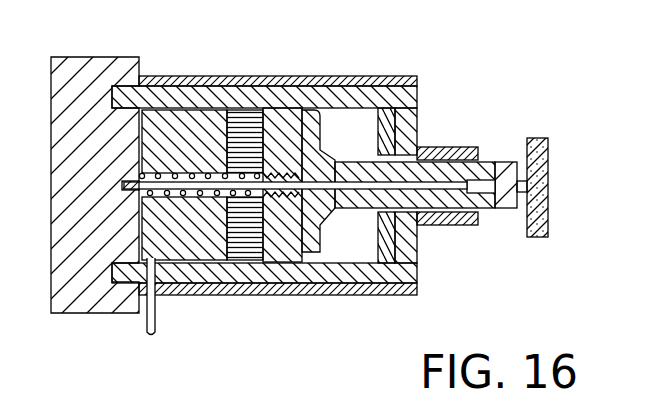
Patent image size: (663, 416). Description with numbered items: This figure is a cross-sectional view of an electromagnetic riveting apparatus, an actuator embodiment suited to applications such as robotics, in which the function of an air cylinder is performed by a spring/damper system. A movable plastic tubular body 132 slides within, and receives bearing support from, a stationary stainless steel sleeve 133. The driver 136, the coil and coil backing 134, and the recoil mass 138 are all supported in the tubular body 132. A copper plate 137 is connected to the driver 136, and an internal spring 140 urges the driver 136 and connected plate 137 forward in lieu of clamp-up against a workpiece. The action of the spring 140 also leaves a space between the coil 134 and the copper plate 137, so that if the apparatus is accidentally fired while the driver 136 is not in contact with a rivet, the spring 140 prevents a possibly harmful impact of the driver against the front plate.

The movable plastic body 132 is at (412, 95).
The stationary stainless steel sleeve 133 is at (307, 76).
The coil and coil backing 134 is at (228, 110).
The driver 136 is at (493, 146).
The copper plate 137 is at (362, 105).
The recoil mass 138 is at (106, 57).
The internal spring 140 is at (197, 200).